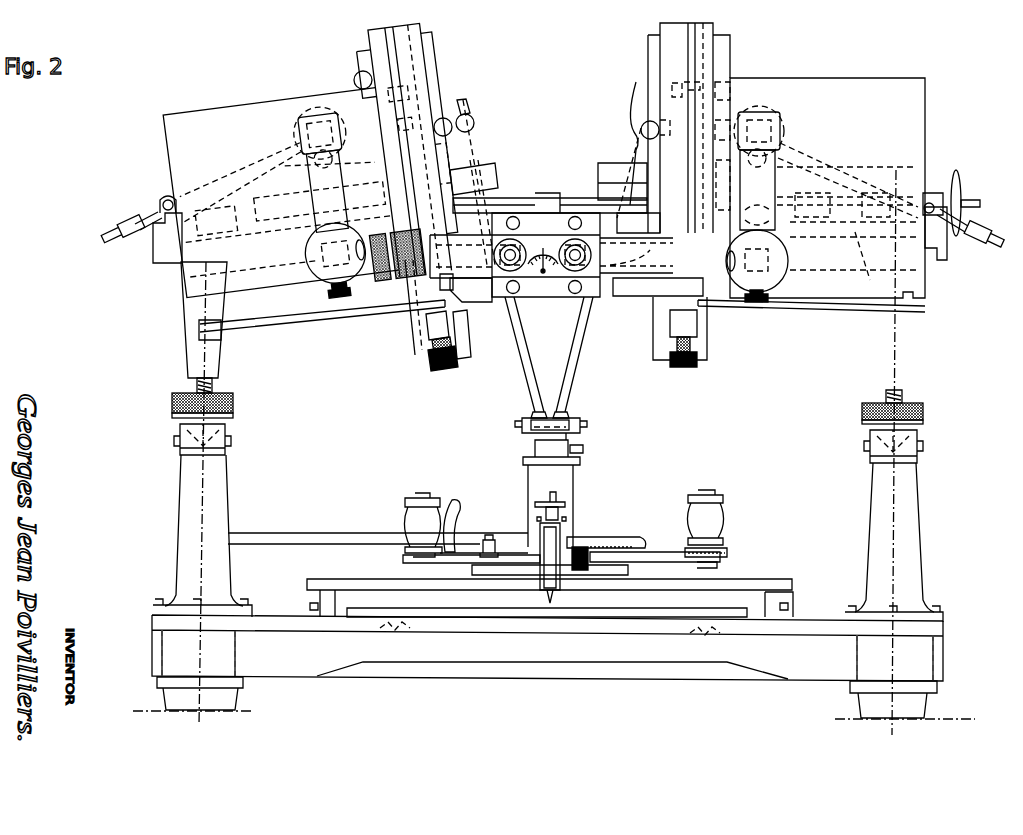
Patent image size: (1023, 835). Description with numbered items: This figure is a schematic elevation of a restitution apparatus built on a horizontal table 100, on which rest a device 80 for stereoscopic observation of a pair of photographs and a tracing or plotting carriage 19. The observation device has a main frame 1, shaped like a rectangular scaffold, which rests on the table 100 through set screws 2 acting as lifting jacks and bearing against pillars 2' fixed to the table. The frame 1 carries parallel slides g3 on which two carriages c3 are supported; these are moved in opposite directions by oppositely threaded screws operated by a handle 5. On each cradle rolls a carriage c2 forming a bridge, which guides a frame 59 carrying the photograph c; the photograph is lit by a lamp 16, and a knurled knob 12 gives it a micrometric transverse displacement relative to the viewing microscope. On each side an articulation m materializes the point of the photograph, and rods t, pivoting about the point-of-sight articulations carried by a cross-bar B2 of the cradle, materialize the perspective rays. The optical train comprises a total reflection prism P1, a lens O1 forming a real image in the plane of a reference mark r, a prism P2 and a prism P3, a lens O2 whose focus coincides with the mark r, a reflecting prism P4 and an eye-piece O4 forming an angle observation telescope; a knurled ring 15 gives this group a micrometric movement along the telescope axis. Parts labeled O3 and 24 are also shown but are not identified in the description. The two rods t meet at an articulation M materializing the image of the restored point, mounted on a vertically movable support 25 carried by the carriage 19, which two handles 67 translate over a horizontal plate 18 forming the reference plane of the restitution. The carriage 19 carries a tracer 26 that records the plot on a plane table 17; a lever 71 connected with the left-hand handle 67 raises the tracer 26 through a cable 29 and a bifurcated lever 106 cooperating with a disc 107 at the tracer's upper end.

The horizontal table 100 is at (178, 618).
The main frame 1 is at (190, 322).
The set screws 2 is at (538, 407).
The pillars 2' is at (537, 443).
The photograph c is at (180, 140).
The carriage forming a bridge c2 is at (430, 53).
The lamp 16 is at (299, 105).
The carriages c3 is at (556, 132).
The knurled ring 15 is at (379, 276).
The articulation m is at (467, 120).
The rods t is at (472, 155).
The device for stereoscopic observation 80 is at (470, 212).
The eye-piece O4 is at (512, 272).
The reflecting prism P4 is at (575, 272).
The beam axis O3 is at (636, 255).
The articulation M is at (530, 413).
The tray 24 is at (572, 418).
The vertically movable support 25 is at (528, 436).
The disc 107 is at (565, 505).
The bifurcated lever 106 is at (567, 517).
The tracer 26 is at (540, 600).
The cable 29 is at (505, 540).
The carriage 19 is at (597, 575).
The horizontal plate 18 is at (753, 590).
The plane table 17 is at (663, 620).
The handles 67 is at (405, 517).
The lever 71 is at (462, 508).
The frame 59 is at (415, 303).
The knurled knob 12 is at (433, 373).
The cross-bar B2 is at (800, 193).
The total reflection prism P1 is at (768, 128).
The lens O1 is at (777, 158).
The reference mark r is at (757, 211).
The lens O2 is at (733, 283).
The prism P2 is at (767, 257).
The prism P3 is at (845, 354).
The parallel slides g3 is at (962, 273).
The handle 5 is at (961, 177).